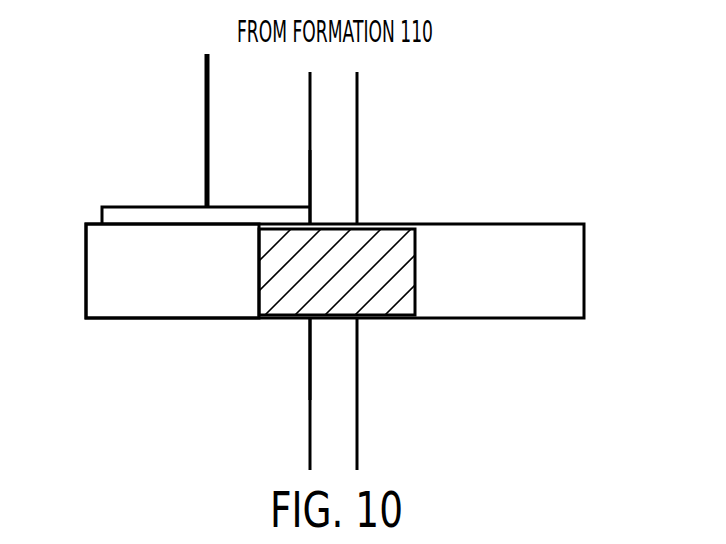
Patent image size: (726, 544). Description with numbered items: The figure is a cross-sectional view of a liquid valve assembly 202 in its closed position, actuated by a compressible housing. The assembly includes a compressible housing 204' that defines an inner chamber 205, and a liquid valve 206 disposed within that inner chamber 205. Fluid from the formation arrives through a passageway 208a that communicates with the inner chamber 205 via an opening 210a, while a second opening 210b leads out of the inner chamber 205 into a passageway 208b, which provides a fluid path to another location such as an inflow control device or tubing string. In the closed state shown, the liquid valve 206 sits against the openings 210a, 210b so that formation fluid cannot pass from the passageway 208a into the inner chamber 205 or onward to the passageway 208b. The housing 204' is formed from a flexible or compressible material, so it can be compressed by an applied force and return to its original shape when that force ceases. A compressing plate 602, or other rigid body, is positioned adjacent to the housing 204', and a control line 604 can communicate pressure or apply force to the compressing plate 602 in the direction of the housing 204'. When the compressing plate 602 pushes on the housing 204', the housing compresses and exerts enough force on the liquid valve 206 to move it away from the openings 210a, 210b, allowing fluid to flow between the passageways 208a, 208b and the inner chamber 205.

The liquid valve assembly 202 is at (432, 148).
The compressible housing 204' is at (335, 234).
The inner chamber 205 is at (108, 280).
The liquid valve 206 is at (436, 277).
The passageway 208a is at (330, 116).
The passageway 208b is at (330, 436).
The opening 210a is at (330, 216).
The opening 210b is at (330, 326).
The compressing plate 602 is at (147, 214).
The control line 604 is at (193, 91).